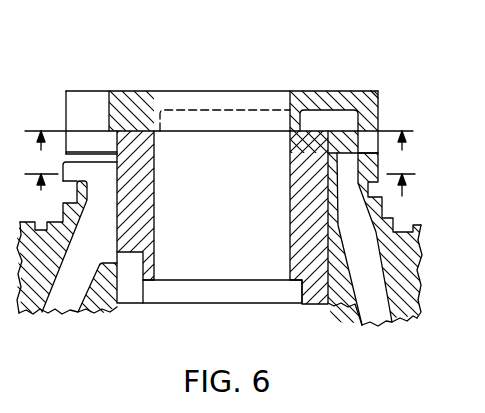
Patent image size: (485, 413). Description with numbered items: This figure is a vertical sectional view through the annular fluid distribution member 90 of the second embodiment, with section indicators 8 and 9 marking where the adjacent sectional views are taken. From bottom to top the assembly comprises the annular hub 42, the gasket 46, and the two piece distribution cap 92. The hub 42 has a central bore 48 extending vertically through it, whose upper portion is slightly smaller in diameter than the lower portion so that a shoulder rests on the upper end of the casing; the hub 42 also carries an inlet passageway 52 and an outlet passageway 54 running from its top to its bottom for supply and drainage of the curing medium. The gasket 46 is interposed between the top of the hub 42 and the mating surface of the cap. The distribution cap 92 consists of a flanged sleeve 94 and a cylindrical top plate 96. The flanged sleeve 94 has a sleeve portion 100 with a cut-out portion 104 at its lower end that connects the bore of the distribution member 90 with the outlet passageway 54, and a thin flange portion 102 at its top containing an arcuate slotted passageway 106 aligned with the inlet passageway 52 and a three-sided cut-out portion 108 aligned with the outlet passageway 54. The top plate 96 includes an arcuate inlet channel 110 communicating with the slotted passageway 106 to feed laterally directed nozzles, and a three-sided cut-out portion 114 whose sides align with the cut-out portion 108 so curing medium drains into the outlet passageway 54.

The annular fluid distribution member 90 is at (312, 70).
The two piece distribution cap 92 is at (120, 82).
The flanged sleeve 94 is at (143, 172).
The cylindrical top plate 96 is at (377, 92).
The sleeve portion 100 is at (155, 205).
The flange portion 102 is at (368, 137).
The cut-out portion 104 is at (133, 293).
The arcuate slotted passageway 106 is at (345, 143).
The three-sided cut-out portion 108 is at (89, 153).
The arcuate inlet channel 110 is at (313, 125).
The three-sided cut-out portion 114 is at (77, 112).
The annular hub 42 is at (99, 311).
The gasket 46 is at (342, 136).
The central bore 48 is at (333, 300).
The inlet passageway 52 is at (385, 322).
The outlet passageway 54 is at (84, 291).
The section line for FIG. 8 is at (220, 152).
The section line for FIG. 9 is at (222, 195).